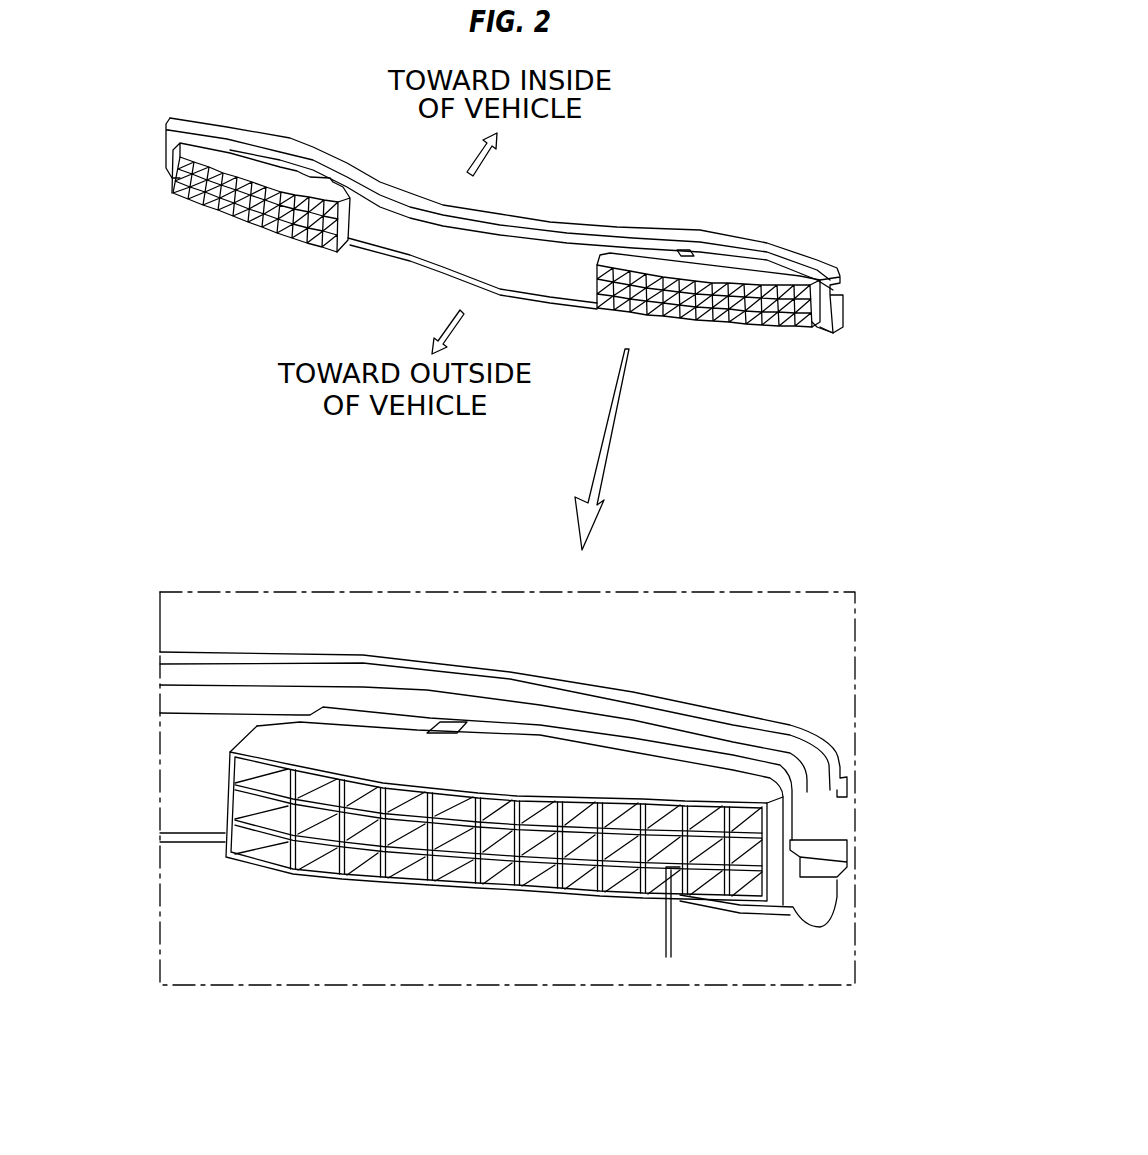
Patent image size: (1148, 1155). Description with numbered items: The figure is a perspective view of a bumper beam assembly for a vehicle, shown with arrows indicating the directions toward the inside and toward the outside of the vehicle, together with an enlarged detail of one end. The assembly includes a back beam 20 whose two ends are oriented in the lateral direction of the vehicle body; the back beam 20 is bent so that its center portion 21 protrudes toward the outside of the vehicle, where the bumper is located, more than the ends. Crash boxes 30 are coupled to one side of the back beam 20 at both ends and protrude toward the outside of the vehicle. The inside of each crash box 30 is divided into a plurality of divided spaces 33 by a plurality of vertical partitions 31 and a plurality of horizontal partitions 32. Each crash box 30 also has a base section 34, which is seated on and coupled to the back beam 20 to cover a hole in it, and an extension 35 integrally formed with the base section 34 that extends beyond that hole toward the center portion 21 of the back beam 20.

The back beam 20 is at (600, 207).
The center portion 21 is at (405, 270).
The crash box 30 is at (231, 215).
The vertical partition 31 is at (343, 800).
The horizontal partition 32 is at (432, 855).
The divided space 33 is at (543, 843).
The base section 34 is at (613, 770).
The extension 35 is at (424, 757).